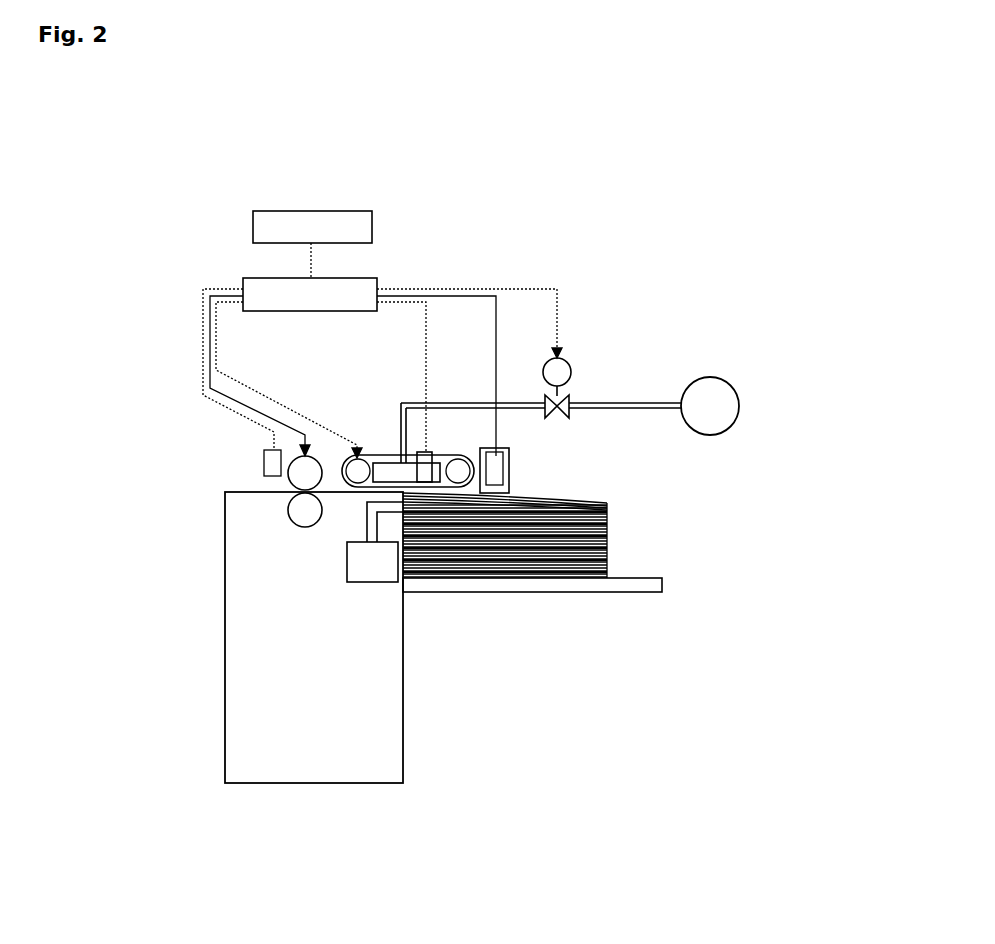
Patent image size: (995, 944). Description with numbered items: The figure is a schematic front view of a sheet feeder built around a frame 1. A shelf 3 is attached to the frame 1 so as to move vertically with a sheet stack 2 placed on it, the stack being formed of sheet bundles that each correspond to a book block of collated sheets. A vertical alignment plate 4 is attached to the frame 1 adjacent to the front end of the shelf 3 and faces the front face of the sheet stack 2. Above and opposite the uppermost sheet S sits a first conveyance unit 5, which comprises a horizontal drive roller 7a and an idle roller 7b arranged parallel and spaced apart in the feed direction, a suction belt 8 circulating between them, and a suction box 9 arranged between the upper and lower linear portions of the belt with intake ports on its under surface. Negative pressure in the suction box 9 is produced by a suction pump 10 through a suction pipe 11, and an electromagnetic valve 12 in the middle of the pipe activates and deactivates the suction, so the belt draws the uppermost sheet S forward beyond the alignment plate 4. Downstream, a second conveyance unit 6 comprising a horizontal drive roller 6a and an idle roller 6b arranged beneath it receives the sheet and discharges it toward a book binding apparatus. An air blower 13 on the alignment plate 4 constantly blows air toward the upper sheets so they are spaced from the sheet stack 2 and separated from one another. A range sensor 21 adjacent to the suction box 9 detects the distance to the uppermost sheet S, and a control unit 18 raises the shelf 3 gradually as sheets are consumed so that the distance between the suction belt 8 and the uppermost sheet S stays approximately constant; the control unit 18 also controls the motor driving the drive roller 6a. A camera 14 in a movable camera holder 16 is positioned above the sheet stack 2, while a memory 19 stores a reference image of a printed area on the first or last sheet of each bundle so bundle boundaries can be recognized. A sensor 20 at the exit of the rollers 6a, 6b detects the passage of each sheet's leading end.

The frame 1 is at (312, 637).
The sheet stack 2 is at (554, 524).
The shelf 3 is at (630, 592).
The vertical alignment plate 4 is at (404, 686).
The first conveyance unit 5 is at (392, 406).
The second conveyance unit 6 is at (240, 537).
The drive roller 6a is at (288, 482).
The idle roller 6b is at (298, 505).
The drive roller 7a is at (354, 462).
The idle roller 7b is at (462, 468).
The suction belt 8 is at (442, 462).
The suction box 9 is at (388, 472).
The suction pump 10 is at (710, 385).
The suction pipe 11 is at (638, 397).
The electromagnetic valve 12 is at (575, 368).
The air blower 13 is at (368, 572).
The camera 14 is at (544, 458).
The camera holder 16 is at (508, 476).
The control unit 18 is at (352, 278).
The memory 19 is at (328, 210).
The sensor 20 is at (262, 462).
The range sensor 21 is at (417, 452).
The uppermost sheet S is at (547, 495).